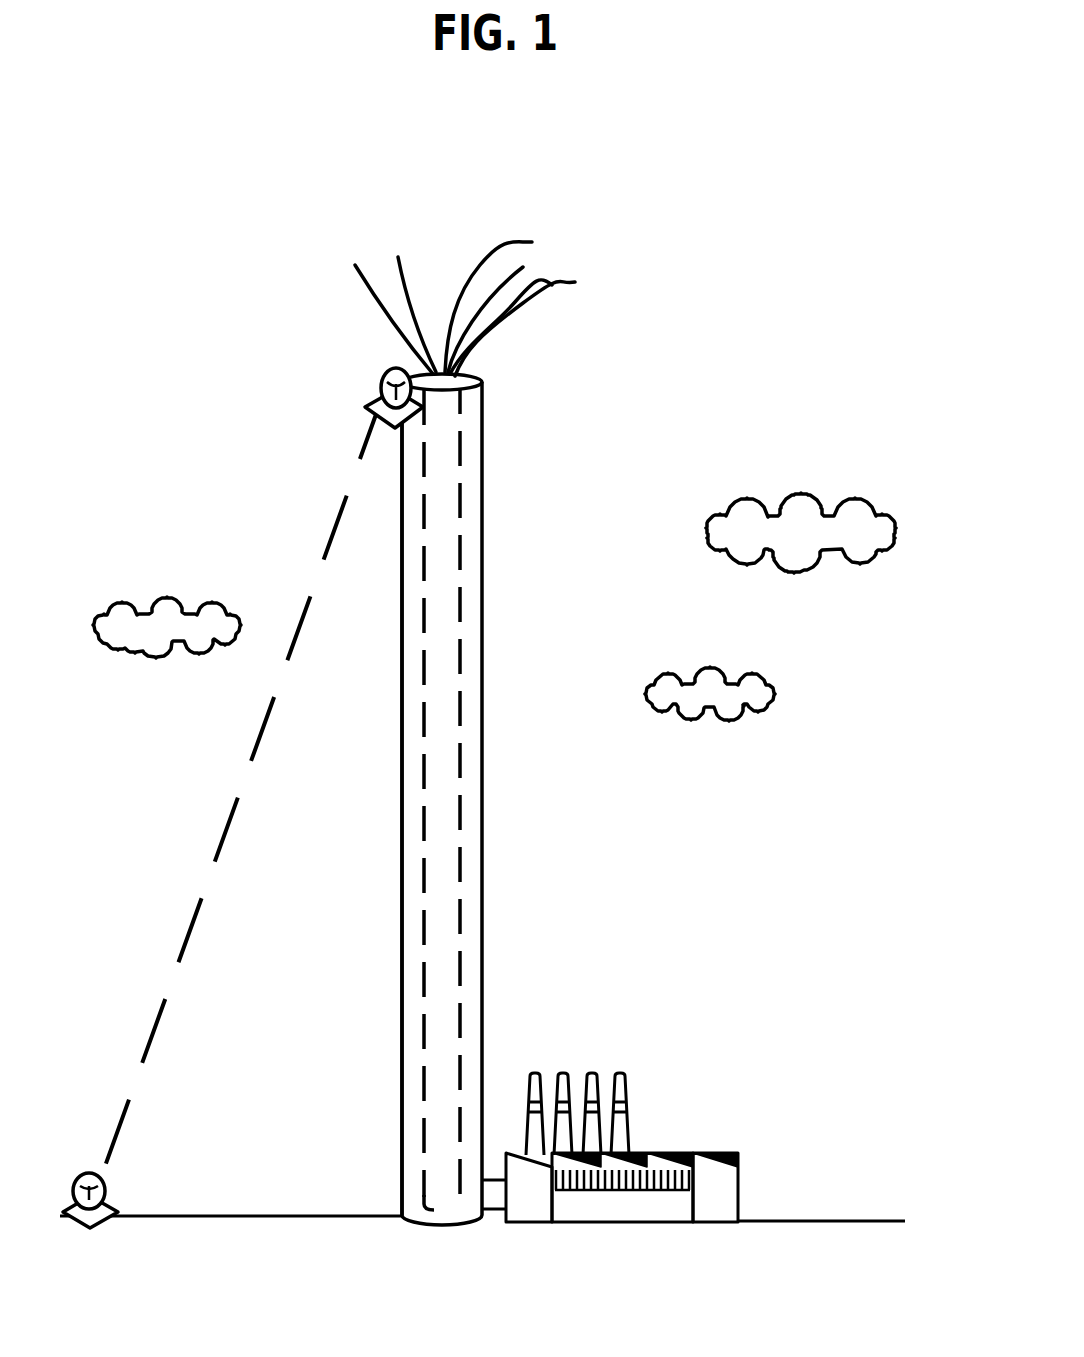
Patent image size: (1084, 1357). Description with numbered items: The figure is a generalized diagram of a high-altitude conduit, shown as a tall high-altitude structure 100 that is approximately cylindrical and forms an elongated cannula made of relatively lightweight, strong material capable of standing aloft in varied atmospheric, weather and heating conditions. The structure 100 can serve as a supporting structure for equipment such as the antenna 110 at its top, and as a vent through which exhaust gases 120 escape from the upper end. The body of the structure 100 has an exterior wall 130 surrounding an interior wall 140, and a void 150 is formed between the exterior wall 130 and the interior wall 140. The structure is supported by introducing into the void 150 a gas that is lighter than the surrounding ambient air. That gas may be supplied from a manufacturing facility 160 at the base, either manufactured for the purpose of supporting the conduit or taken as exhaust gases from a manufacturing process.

The high-altitude structure 100 is at (481, 497).
The antenna 110 is at (388, 370).
The exhaust gases 120 is at (557, 270).
The exterior wall 130 is at (482, 622).
The interior wall 140 is at (460, 692).
The void 150 is at (470, 793).
The manufacturing facility 160 is at (713, 1153).